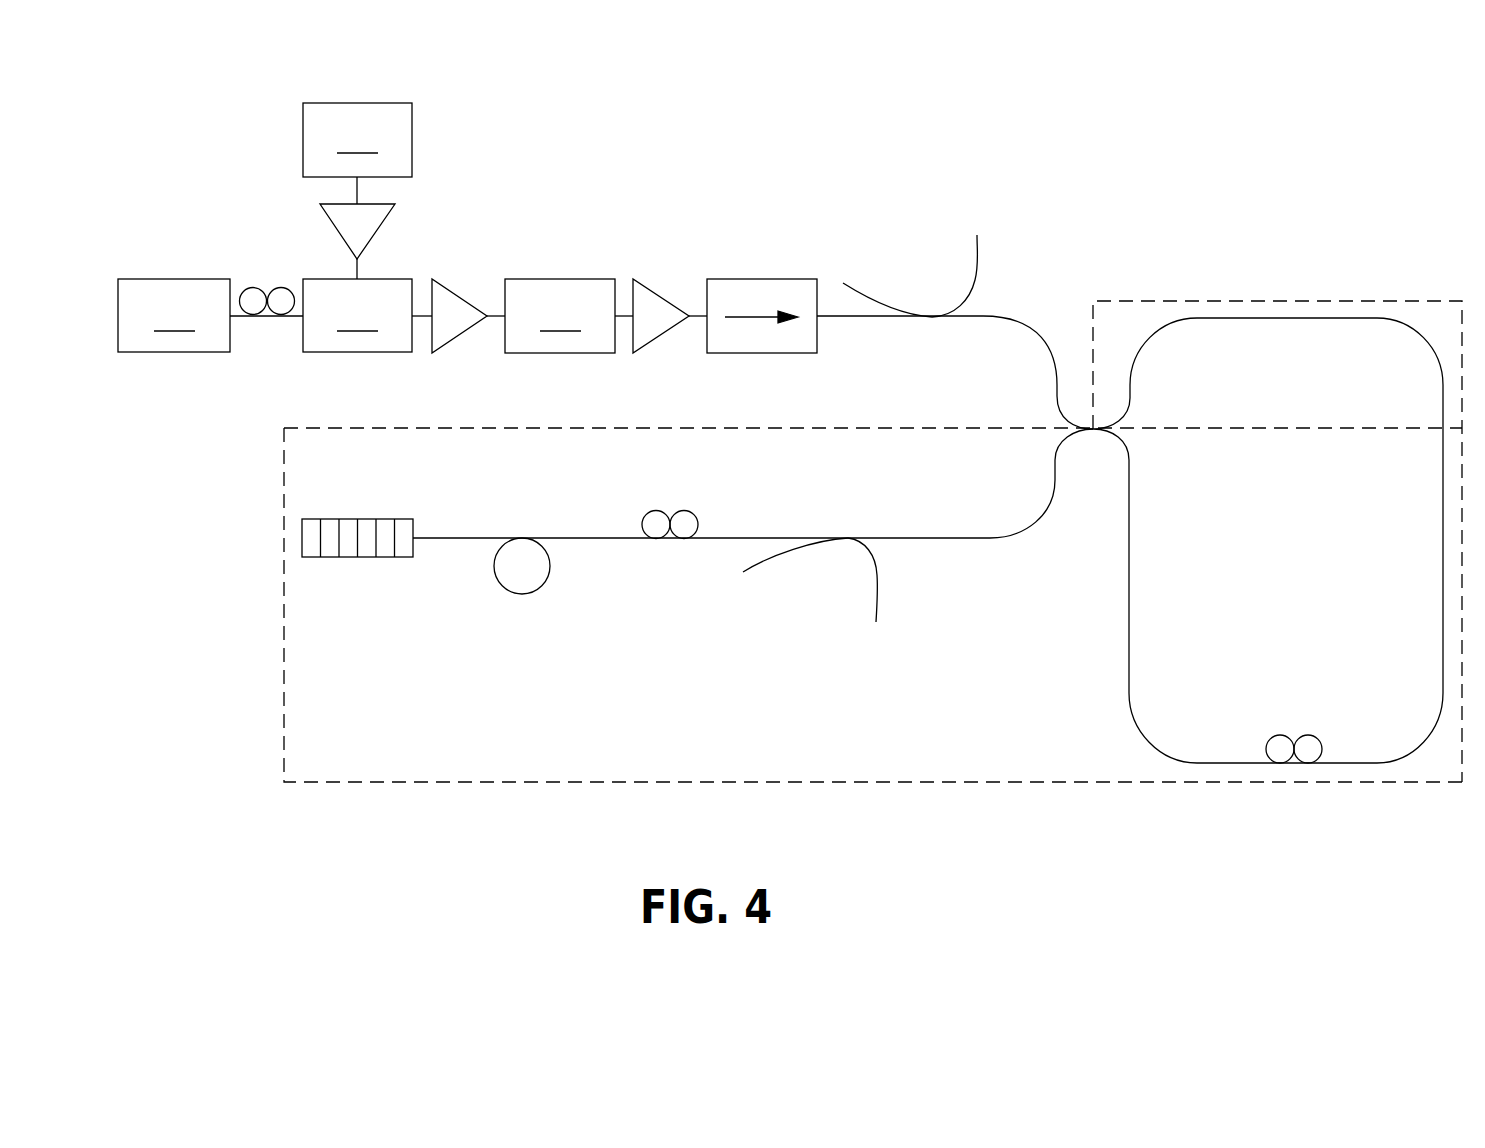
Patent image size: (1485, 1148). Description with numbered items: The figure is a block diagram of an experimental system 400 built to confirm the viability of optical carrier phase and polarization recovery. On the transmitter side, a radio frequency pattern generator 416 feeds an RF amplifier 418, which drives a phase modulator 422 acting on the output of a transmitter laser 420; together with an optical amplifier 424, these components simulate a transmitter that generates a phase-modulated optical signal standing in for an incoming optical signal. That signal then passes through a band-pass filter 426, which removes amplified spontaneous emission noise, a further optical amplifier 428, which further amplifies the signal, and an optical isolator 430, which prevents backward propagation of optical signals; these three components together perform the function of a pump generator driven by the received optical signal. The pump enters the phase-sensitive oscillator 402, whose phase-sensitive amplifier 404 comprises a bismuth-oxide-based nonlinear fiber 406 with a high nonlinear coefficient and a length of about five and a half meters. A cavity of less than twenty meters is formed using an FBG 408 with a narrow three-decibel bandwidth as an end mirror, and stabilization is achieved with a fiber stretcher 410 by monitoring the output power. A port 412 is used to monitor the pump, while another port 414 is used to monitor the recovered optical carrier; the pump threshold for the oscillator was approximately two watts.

The system 400 is at (1156, 160).
The phase-sensitive oscillator 402 is at (1313, 300).
The phase-sensitive amplifier 404 is at (1085, 665).
The bismuth-oxide-based nonlinear fiber 406 is at (1443, 523).
The FBG 408 is at (366, 518).
The fiber stretcher 410 is at (522, 595).
The port 412 is at (984, 278).
The port 414 is at (880, 576).
The radio frequency pattern generator 416 is at (357, 153).
The RF amplifier 418 is at (338, 233).
The transmitter laser 420 is at (174, 315).
The phase modulator 422 is at (357, 315).
The optical amplifier 424 is at (452, 287).
The band-pass filter 426 is at (560, 316).
The further optical amplifier 428 is at (654, 287).
The optical isolator 430 is at (794, 354).